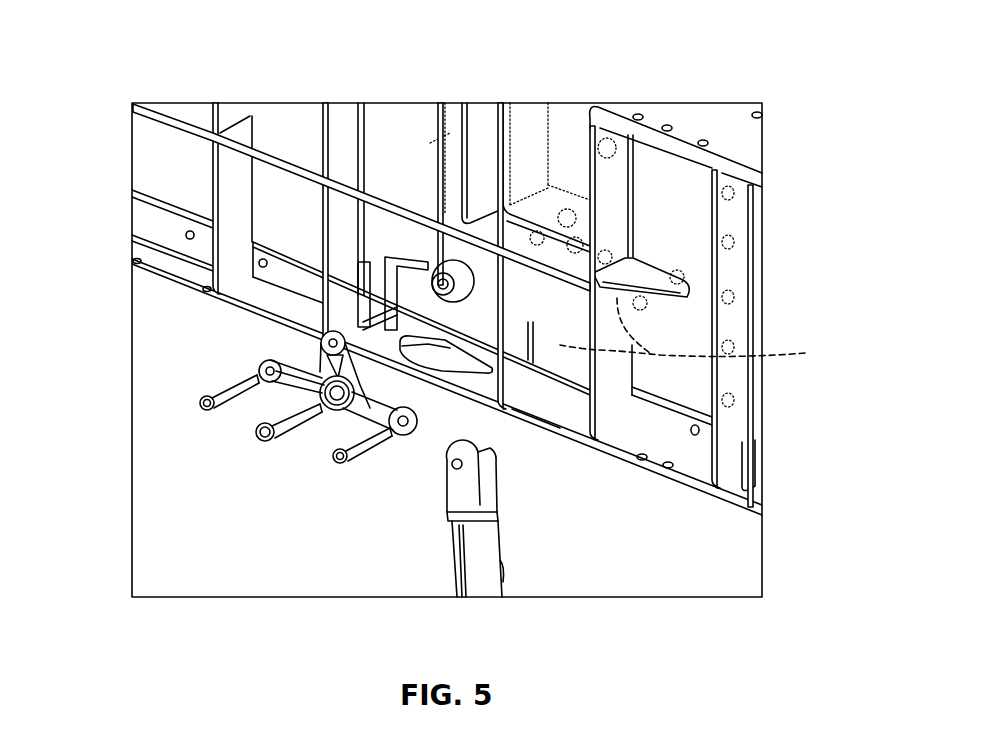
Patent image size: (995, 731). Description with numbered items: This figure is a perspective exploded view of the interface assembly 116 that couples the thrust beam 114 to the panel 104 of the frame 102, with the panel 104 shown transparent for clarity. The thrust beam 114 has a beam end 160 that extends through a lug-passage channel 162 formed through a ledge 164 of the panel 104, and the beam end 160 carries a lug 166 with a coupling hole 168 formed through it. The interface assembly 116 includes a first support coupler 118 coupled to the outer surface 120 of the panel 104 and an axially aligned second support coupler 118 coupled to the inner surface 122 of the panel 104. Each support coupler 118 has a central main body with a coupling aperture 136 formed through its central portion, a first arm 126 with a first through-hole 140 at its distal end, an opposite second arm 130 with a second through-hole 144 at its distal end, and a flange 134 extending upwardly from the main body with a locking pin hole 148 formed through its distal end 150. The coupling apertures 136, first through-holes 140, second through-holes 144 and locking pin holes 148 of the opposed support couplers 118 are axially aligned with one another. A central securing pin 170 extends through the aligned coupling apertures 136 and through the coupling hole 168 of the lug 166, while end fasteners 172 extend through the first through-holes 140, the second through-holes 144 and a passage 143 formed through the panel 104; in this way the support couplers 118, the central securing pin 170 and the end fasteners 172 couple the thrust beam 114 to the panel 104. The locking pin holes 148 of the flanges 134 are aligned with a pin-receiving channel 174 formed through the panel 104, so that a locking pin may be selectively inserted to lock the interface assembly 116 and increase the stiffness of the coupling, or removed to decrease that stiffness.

The frame 102 is at (493, 330).
The panel 104 is at (697, 256).
The thrust beam 114 is at (502, 563).
The interface assembly 116 is at (450, 281).
The support coupler 118 is at (253, 355).
The outer surface 120 is at (653, 420).
The inner surface 122 is at (683, 192).
The first arm 126 is at (306, 364).
The second arm 130 is at (372, 406).
The flange 134 is at (362, 327).
The coupling aperture 136 is at (331, 399).
The first through-hole 140 is at (258, 359).
The passage 143 is at (365, 262).
The second through-hole 144 is at (398, 435).
The locking pin hole 148 is at (333, 338).
The distal end 150 is at (366, 323).
The beam end 160 is at (478, 554).
The lug-passage channel 162 is at (443, 356).
The ledge 164 is at (548, 434).
The lug 166 is at (452, 497).
The coupling hole 168 is at (452, 467).
The central securing pin 170 is at (255, 433).
The end fastener 172 is at (199, 402).
The pin-receiving channel 174 is at (447, 283).